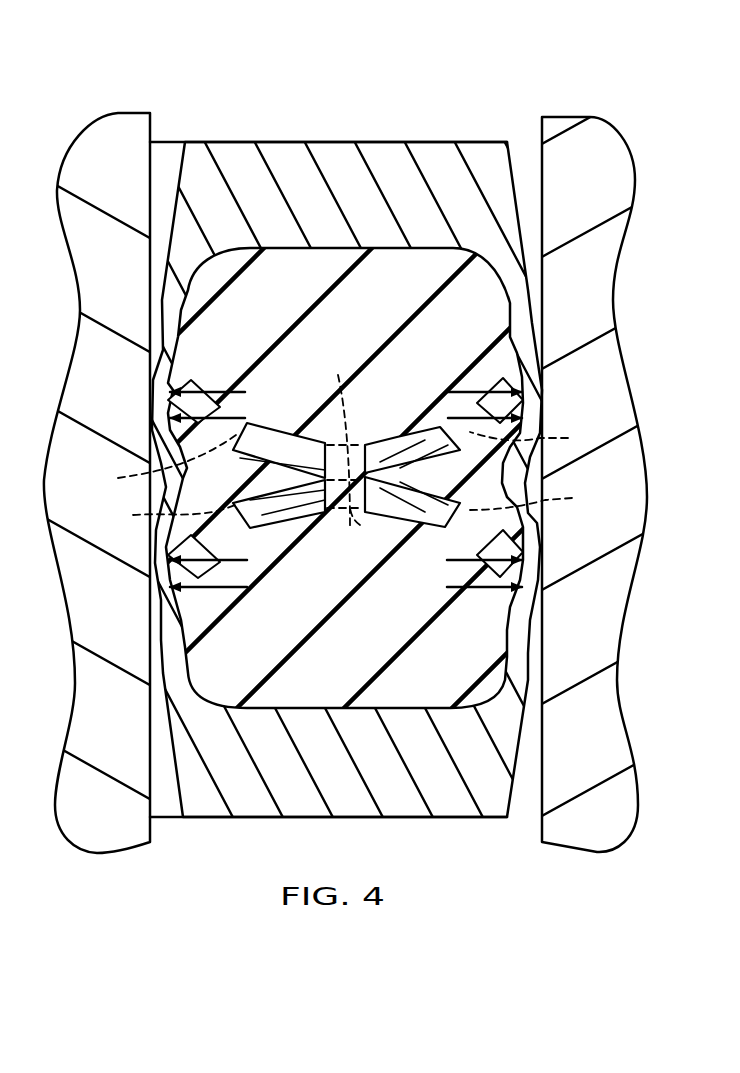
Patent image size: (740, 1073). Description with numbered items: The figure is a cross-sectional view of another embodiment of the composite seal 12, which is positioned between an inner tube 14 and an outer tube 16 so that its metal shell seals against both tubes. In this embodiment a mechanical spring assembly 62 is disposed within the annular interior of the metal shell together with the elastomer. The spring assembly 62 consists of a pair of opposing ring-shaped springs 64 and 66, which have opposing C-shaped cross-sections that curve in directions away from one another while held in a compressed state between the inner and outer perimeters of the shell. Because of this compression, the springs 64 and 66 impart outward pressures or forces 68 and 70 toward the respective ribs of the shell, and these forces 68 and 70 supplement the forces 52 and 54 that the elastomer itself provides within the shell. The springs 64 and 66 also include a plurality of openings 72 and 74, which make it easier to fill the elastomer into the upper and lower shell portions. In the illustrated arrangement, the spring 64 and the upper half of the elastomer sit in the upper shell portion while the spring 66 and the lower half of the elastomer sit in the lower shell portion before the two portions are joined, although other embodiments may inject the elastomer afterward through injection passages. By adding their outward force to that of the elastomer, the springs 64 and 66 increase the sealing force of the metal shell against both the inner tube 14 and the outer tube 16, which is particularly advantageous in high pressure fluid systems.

The composite seal 12 is at (433, 50).
The inner tube 14 is at (143, 112).
The outer tube 16 is at (568, 117).
The force 52 is at (213, 392).
The force 54 is at (478, 388).
The mechanical spring assembly 62 is at (480, 333).
The ring-shaped spring 64 is at (522, 405).
The ring-shaped spring 66 is at (525, 510).
The outward force 68 is at (222, 414).
The outward force 70 is at (445, 398).
The openings 72 is at (343, 438).
The openings 74 is at (352, 519).